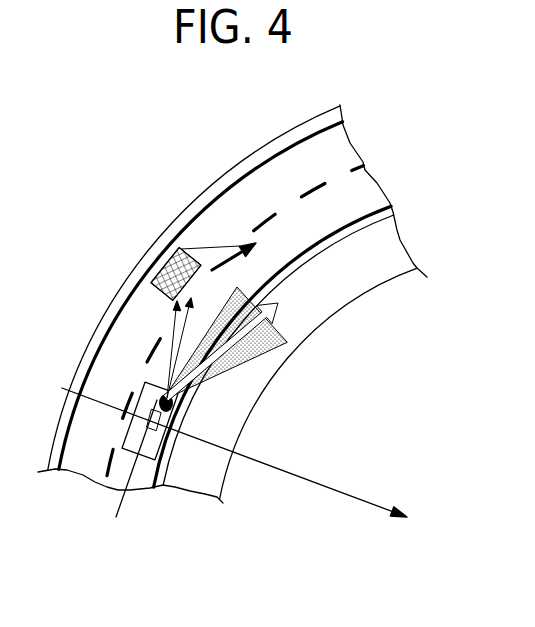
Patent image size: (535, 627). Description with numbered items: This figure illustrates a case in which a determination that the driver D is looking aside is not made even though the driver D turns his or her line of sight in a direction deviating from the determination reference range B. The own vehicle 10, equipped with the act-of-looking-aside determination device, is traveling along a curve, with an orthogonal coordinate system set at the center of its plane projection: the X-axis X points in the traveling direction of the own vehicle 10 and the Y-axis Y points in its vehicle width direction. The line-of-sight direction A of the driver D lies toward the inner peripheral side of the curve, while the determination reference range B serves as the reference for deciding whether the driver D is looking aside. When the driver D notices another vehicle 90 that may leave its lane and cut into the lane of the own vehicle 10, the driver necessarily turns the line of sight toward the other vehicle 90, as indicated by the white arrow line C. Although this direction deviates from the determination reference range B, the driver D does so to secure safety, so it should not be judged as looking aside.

The own vehicle 10 is at (147, 447).
The other vehicle 90 is at (168, 258).
The line-of-sight direction A is at (285, 343).
The determination reference range B is at (250, 340).
The white arrow line C is at (168, 318).
The driver D is at (168, 417).
The X-axis X is at (124, 478).
The Y-axis Y is at (221, 444).